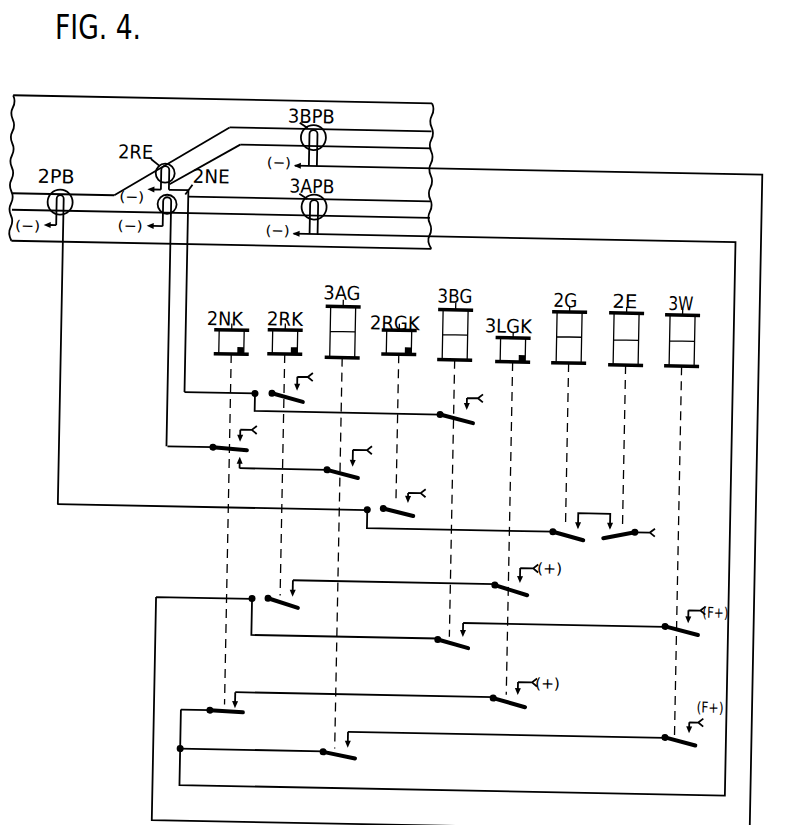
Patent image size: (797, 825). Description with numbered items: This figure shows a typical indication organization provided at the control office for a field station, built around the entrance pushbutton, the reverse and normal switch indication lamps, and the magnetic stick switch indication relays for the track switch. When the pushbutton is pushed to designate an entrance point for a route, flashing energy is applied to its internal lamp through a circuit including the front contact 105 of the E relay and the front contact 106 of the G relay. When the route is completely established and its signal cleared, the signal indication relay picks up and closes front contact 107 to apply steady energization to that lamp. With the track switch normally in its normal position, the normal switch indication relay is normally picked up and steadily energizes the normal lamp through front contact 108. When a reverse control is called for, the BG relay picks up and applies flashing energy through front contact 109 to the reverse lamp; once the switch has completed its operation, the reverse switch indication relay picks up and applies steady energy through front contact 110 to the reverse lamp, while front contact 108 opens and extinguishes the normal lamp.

The front contact of relay 2E 105 is at (642, 542).
The front contact of relay 2G 106 is at (573, 535).
The front contact of relay 2RGK 107 is at (305, 505).
The front contact of relay 2NK 108 is at (283, 450).
The front contact of relay 3BG 109 is at (463, 417).
The front contact of relay 2RK 110 is at (312, 390).